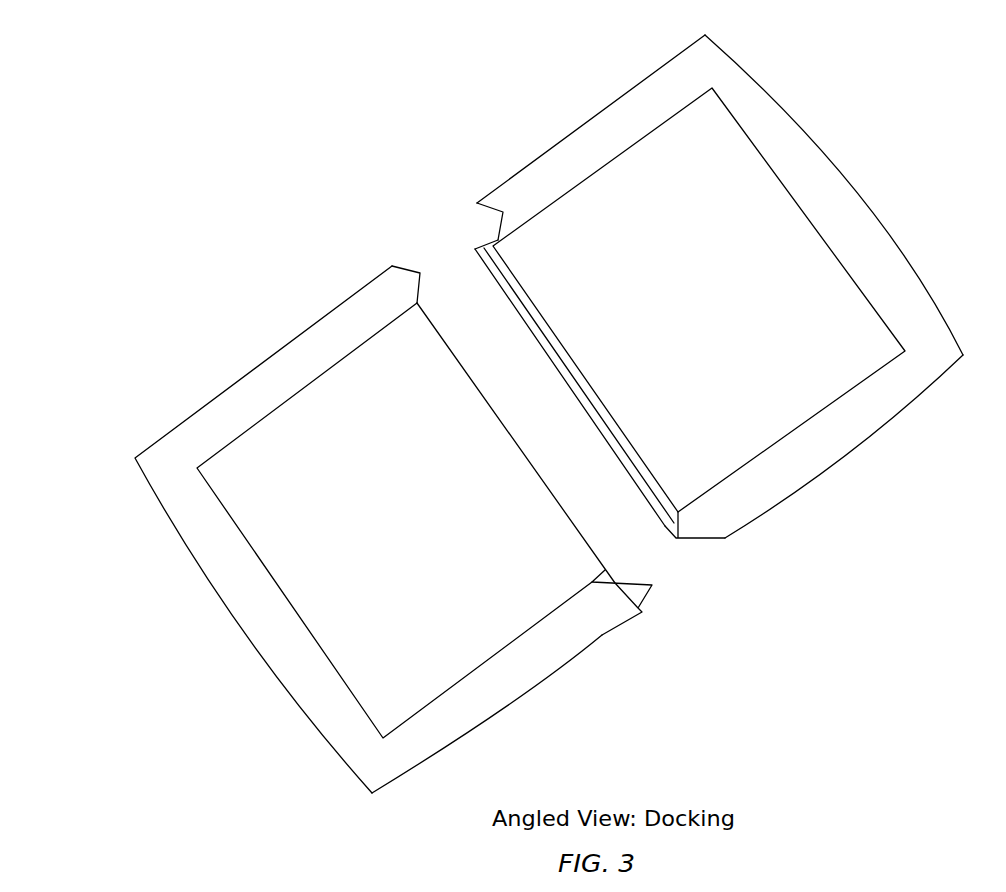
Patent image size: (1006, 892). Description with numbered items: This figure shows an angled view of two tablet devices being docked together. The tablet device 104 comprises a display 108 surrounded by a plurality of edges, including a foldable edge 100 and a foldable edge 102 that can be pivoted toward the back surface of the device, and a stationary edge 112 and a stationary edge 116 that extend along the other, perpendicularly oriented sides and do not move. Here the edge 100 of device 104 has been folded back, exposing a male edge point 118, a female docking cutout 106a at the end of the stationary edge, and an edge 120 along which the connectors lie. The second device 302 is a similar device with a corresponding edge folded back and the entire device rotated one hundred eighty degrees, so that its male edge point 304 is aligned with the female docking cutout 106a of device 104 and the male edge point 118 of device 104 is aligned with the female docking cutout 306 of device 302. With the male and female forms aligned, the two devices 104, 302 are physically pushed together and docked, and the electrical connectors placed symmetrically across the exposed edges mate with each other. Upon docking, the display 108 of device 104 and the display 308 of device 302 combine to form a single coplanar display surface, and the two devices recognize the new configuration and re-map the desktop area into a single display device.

The foldable edge 100 is at (662, 528).
The foldable edge 102 is at (860, 430).
The tablet device 104 is at (674, 324).
The docking cutout 106a is at (485, 206).
The display 108 is at (745, 182).
The stationary edge 112 is at (628, 107).
The stationary edge 116 is at (900, 300).
The male edge point 118 is at (713, 545).
The edge 120 is at (479, 267).
The second device 302 is at (399, 516).
The male edge point 304 is at (417, 283).
The female docking cutout 306 is at (622, 588).
The display 308 is at (522, 602).